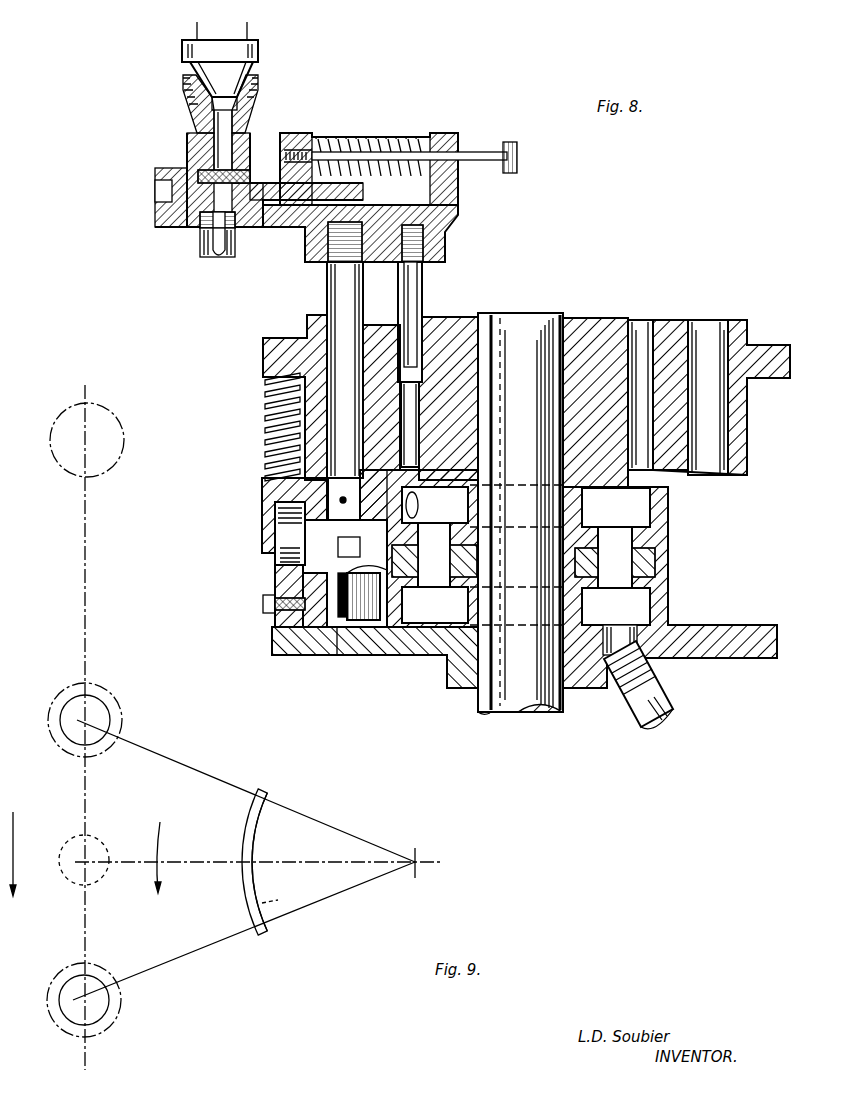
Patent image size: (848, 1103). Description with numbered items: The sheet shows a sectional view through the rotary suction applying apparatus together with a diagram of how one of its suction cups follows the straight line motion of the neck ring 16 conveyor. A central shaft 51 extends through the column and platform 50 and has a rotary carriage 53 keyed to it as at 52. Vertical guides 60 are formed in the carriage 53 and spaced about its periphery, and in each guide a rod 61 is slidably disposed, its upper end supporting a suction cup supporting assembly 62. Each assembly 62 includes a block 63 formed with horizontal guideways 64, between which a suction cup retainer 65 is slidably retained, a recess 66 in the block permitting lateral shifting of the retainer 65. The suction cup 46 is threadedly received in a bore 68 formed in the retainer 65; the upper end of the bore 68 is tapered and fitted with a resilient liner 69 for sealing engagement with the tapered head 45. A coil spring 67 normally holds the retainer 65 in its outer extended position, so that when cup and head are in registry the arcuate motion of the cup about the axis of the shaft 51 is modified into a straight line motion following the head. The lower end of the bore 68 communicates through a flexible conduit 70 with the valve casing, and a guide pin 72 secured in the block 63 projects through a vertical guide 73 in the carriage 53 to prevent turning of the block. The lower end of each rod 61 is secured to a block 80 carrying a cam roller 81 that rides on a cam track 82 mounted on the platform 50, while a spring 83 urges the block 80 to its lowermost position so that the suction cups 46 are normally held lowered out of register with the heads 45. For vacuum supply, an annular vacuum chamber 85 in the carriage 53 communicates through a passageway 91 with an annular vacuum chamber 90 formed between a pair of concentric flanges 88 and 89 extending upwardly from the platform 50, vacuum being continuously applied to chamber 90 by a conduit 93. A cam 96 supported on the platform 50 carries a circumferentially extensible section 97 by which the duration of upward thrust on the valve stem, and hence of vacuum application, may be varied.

In FIG. 9, the neck ring 16 is at (66, 476).
In FIG. 8, the tapered head 45 is at (255, 45).
In FIG. 8, the suction cup 46 is at (242, 102).
In FIG. 9, the suction cup 46 is at (62, 738).
In FIG. 8, the platform 50 is at (735, 635).
In FIG. 8, the central shaft 51 is at (514, 705).
In FIG. 8, the key 52 is at (488, 322).
In FIG. 8, the rotary carriage 53 is at (600, 320).
In FIG. 8, the vertical guide 60 is at (372, 322).
In FIG. 8, the rod 61 is at (328, 293).
In FIG. 8, the suction cup supporting assembly 62 is at (317, 192).
In FIG. 8, the block 63 is at (452, 228).
In FIG. 8, the horizontal guideway 64 is at (160, 195).
In FIG. 8, the suction cup retainer 65 is at (200, 235).
In FIG. 8, the recess 66 is at (175, 215).
In FIG. 8, the coil spring 67 is at (374, 142).
In FIG. 8, the bore 68 is at (245, 135).
In FIG. 8, the resilient liner 69 is at (190, 82).
In FIG. 8, the flexible conduit 70 is at (224, 258).
In FIG. 8, the guide pin 72 is at (418, 312).
In FIG. 8, the vertical guide 73 is at (418, 482).
In FIG. 8, the block 80 is at (262, 512).
In FIG. 8, the cam roller 81 is at (290, 537).
In FIG. 8, the cam track 82 is at (275, 592).
In FIG. 9, the cam track 82 is at (244, 836).
In FIG. 8, the spring 83 is at (265, 418).
In FIG. 8, the annular vacuum chamber 85 is at (625, 513).
In FIG. 8, the concentric flange 88 is at (435, 605).
In FIG. 8, the concentric flange 89 is at (435, 612).
In FIG. 8, the annular vacuum chamber 90 is at (630, 612).
In FIG. 8, the passageway 91 is at (615, 558).
In FIG. 8, the conduit 93 is at (656, 708).
In FIG. 8, the cam 96 is at (333, 650).
In FIG. 9, the cam 96 is at (253, 847).
In FIG. 8, the circumferentially extensible section 97 is at (290, 582).
In FIG. 9, the circumferentially extensible section 97 is at (258, 915).